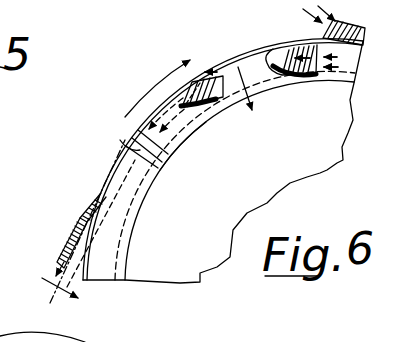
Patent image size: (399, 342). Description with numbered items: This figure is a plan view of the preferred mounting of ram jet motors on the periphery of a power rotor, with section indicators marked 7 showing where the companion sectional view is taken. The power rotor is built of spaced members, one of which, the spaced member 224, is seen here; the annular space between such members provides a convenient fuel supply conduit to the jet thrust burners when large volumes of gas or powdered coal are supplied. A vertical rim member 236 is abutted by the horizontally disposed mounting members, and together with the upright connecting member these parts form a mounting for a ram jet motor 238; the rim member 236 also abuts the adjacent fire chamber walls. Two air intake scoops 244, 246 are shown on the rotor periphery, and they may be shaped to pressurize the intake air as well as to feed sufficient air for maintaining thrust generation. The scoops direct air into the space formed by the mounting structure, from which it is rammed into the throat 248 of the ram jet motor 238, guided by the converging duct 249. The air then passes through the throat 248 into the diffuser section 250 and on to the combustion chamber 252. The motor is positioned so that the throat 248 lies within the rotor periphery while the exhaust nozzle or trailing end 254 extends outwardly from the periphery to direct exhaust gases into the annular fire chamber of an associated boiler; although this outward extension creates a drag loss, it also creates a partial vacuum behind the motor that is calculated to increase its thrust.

The spaced member 224 is at (282, 175).
The rim member 236 is at (127, 143).
The ram jet motor 238 is at (67, 247).
The air intake scoop 244 is at (207, 67).
The air intake scoop 246 is at (278, 62).
The throat 248 is at (126, 148).
The converging duct 249 is at (165, 160).
The diffuser section 250 is at (108, 166).
The combustion chamber 252 is at (77, 230).
The trailing end 254 is at (323, 39).
The section line 7- 7 is at (152, 190).